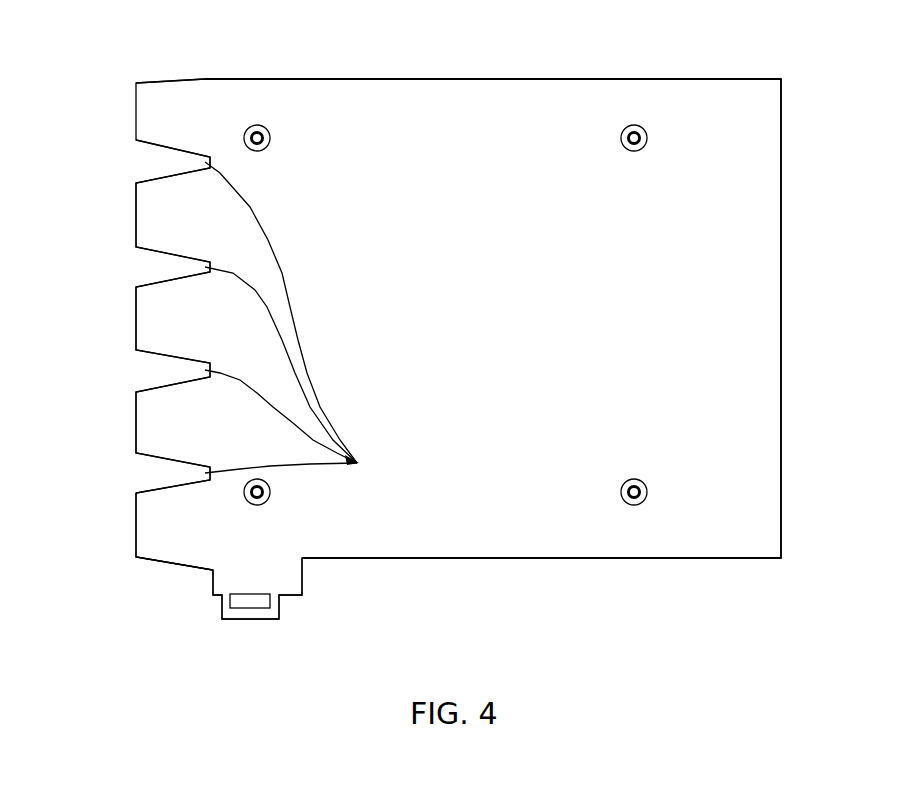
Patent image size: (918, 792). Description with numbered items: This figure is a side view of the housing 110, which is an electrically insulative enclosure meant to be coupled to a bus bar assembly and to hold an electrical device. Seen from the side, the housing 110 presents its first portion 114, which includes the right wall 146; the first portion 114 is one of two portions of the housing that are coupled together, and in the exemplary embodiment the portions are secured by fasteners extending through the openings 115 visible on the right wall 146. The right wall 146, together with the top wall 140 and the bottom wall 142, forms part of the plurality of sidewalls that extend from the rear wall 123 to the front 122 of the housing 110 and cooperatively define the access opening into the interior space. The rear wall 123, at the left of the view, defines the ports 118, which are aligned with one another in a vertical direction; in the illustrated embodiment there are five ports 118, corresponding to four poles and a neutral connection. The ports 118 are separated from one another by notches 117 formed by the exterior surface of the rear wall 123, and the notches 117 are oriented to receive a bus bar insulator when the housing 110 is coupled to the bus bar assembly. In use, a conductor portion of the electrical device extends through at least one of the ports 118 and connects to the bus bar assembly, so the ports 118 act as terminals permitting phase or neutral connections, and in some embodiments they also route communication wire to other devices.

The housing 110 is at (270, 50).
The first portion 114 is at (447, 528).
The openings 115 is at (643, 502).
The notches 117 is at (301, 318).
The ports 118 is at (115, 324).
The front 122 is at (782, 210).
The rear wall 123 is at (155, 543).
The top wall 140 is at (467, 79).
The bottom wall 142 is at (424, 558).
The right wall 146 is at (640, 326).